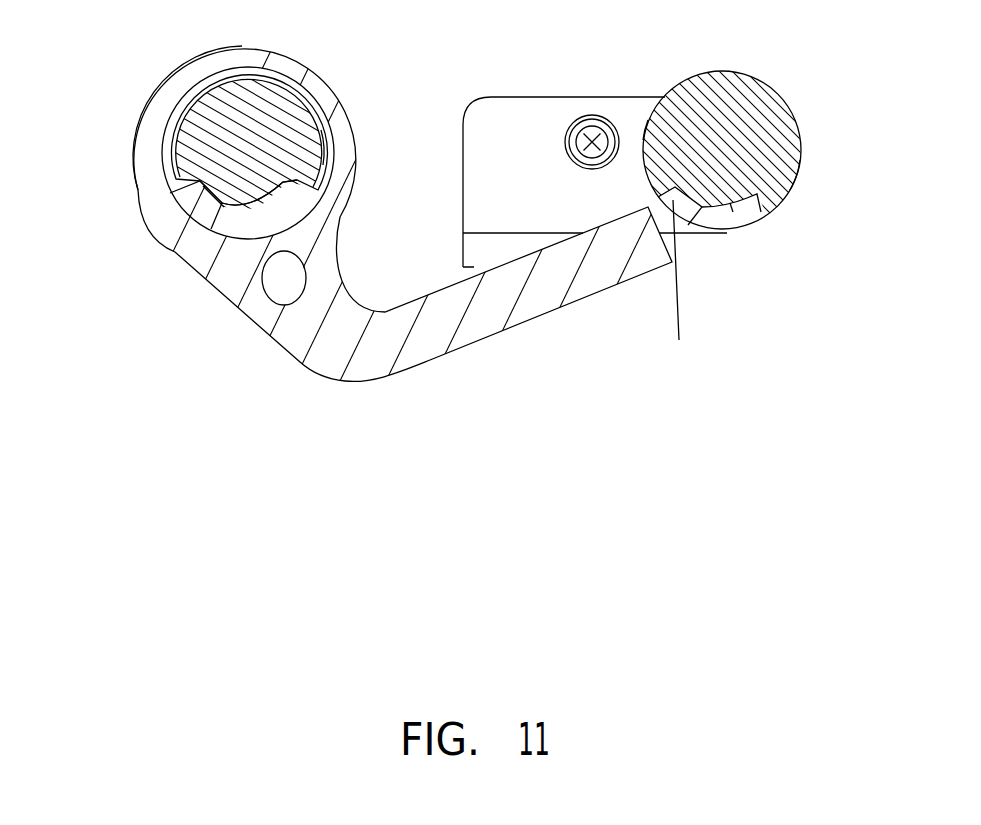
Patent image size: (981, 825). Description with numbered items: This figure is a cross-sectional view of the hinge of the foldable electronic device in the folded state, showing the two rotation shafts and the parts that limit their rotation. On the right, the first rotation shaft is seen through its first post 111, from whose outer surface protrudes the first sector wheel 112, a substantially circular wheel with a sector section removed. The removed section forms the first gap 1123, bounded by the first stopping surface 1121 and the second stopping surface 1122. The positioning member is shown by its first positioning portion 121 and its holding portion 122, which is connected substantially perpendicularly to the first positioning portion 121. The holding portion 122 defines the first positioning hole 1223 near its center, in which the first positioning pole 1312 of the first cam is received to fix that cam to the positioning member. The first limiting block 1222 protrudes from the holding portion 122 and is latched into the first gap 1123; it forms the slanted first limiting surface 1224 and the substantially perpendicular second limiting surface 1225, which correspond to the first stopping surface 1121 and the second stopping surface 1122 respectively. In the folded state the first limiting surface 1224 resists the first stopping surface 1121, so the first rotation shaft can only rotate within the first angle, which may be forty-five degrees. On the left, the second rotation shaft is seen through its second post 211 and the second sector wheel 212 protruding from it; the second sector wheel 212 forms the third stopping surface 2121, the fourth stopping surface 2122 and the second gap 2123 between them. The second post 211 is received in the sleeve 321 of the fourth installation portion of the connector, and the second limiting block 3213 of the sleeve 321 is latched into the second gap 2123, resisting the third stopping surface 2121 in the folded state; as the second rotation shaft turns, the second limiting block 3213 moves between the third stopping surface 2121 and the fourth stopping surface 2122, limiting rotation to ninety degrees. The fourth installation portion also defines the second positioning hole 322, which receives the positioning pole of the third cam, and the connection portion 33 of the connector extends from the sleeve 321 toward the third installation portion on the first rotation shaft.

The first post 111 is at (723, 140).
The first sector wheel 112 is at (790, 190).
The first stopping surface 1121 is at (642, 140).
The second stopping surface 1122 is at (760, 217).
The first gap 1123 is at (743, 210).
The first positioning portion 121 is at (484, 254).
The holding portion 122 is at (487, 117).
The first limiting block 1222 is at (692, 212).
The first positioning hole 1223 is at (570, 130).
The first limiting surface 1224 is at (680, 286).
The second limiting surface 1225 is at (730, 203).
The first positioning pole 1312 is at (593, 128).
The second post 211 is at (248, 148).
The second sector wheel 212 is at (212, 88).
The third stopping surface 2121 is at (173, 125).
The fourth stopping surface 2122 is at (323, 147).
The second gap 2123 is at (290, 198).
The sleeve 321 is at (147, 150).
The second limiting block 3213 is at (203, 202).
The second positioning hole 322 is at (275, 282).
The connection portion 33 is at (487, 318).